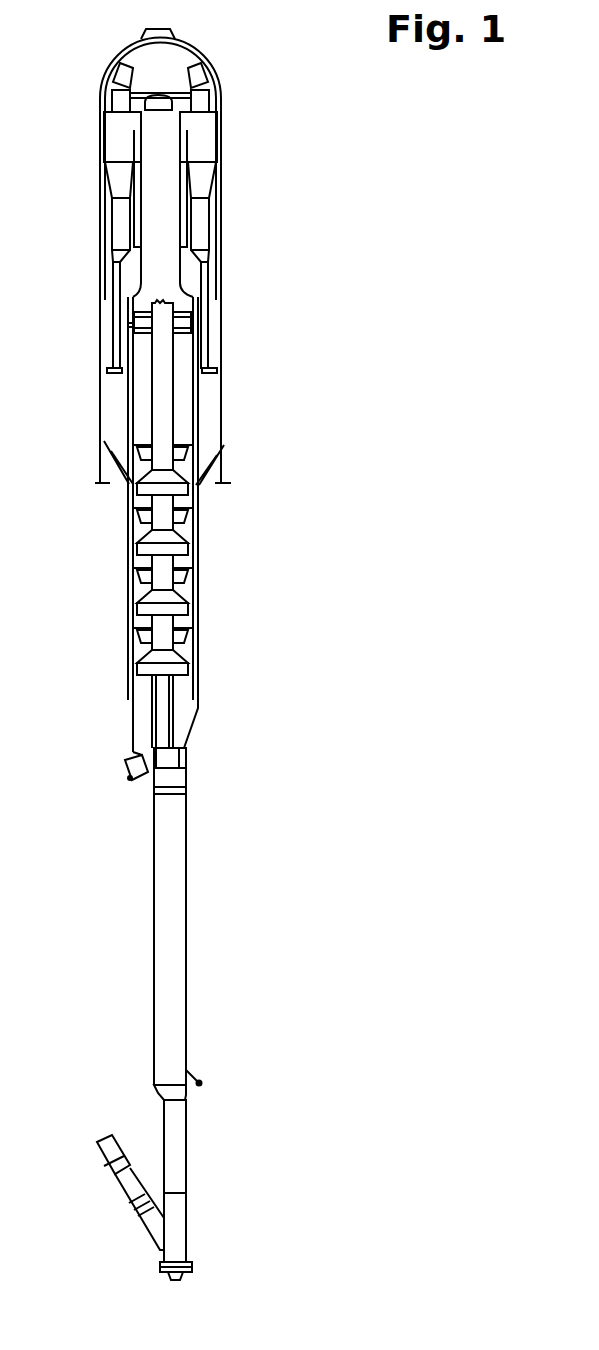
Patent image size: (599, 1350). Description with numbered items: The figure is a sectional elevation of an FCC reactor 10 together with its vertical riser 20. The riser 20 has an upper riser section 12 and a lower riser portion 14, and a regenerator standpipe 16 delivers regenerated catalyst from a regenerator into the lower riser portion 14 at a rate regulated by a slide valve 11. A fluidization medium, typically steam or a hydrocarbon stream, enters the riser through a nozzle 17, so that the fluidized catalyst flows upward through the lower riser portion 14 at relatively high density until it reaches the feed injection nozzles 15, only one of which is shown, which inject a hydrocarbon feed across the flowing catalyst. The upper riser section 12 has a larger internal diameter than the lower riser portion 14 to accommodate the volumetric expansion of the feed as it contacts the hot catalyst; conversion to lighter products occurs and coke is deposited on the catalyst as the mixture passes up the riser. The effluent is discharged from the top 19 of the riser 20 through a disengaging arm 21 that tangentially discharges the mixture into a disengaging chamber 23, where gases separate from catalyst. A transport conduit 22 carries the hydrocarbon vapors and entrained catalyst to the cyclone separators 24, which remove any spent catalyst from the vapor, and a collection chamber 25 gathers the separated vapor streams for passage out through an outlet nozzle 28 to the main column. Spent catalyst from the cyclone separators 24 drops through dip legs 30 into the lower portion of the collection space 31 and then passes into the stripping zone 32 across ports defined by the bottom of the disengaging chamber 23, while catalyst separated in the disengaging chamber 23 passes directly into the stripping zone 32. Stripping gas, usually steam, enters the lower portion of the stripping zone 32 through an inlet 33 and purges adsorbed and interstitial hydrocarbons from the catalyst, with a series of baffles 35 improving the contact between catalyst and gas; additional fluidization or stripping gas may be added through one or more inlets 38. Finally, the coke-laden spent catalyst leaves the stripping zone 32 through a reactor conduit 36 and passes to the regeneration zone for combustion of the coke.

The reactor 10 is at (240, 326).
The slide valve 11 is at (124, 1188).
The upper riser section 12 is at (190, 877).
The lower riser portion 14 is at (187, 1148).
The feed injection nozzles 15 is at (190, 1073).
The regenerator standpipe 16 is at (97, 1150).
The nozzle 17 is at (184, 1277).
The top of riser 19 is at (164, 320).
The vertical riser 20 is at (164, 1029).
The disengaging arm 21 is at (184, 337).
The transport conduit 22 is at (147, 215).
The disengaging chamber 23 is at (199, 406).
The cyclone separators 24 is at (120, 125).
The collection chamber 25 is at (172, 69).
The outlet nozzle 28 is at (170, 36).
The dip legs 30 is at (114, 289).
The collection space 31 is at (114, 411).
The stripping zone 32 is at (180, 596).
The inlet 33 is at (197, 648).
The baffles 35 is at (133, 534).
The reactor conduit 36 is at (125, 773).
The inlets 38 is at (110, 447).